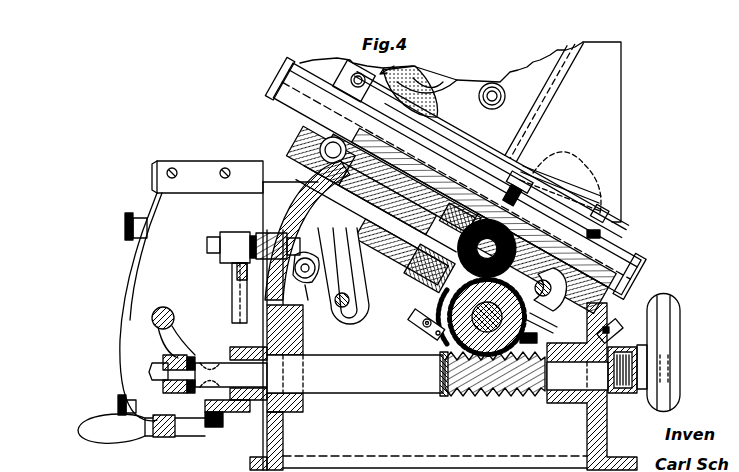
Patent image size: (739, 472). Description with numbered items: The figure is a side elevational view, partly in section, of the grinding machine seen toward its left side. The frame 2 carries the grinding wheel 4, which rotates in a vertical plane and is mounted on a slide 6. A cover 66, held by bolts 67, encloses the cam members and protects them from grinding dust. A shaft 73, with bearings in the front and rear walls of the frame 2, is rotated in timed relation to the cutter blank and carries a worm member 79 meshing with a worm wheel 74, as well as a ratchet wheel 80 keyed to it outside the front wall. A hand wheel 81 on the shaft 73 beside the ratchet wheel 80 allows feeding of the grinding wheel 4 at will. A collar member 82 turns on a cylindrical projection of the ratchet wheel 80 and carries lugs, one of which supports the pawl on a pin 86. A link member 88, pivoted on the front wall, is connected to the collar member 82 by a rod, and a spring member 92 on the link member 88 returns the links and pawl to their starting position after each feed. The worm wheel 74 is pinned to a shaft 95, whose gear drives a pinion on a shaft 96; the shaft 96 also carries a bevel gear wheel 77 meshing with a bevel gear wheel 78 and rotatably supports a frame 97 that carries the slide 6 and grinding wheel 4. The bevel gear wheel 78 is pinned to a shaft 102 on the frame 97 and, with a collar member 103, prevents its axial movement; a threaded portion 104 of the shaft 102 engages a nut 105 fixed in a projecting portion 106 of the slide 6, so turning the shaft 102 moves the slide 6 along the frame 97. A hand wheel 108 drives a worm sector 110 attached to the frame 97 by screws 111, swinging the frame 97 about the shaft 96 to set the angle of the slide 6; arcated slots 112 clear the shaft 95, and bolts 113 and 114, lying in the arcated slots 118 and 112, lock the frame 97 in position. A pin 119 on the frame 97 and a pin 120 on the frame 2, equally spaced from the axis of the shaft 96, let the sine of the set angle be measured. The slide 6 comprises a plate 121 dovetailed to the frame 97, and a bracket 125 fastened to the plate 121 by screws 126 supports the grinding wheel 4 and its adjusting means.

The frame 2 is at (602, 442).
The grinding wheel 4 is at (391, 62).
The slide 6 is at (620, 240).
The cover 66 is at (130, 291).
The bolts 67 is at (128, 214).
The shaft 73 is at (400, 394).
The worm wheel 74 is at (447, 305).
The bevel gear wheel 77 is at (468, 291).
The bevel gear wheel 78 is at (457, 255).
The worm member 79 is at (486, 396).
The ratchet wheel 80 is at (207, 347).
The hand wheel 81 is at (166, 307).
The collar member 82 is at (240, 413).
The pin 86 is at (200, 420).
The link member 88 is at (237, 236).
The spring member 92 is at (245, 232).
The shaft 95 is at (442, 357).
The shaft 96 is at (527, 198).
The frame 97 is at (378, 250).
The shaft 102 is at (413, 268).
The collar member 103 is at (352, 237).
The threaded portion 104 is at (402, 184).
The nut 105 is at (376, 196).
The projecting portion 106 is at (312, 170).
The hand wheel 108 is at (674, 320).
The worm sector 110 is at (420, 334).
The screws 111 is at (422, 325).
The arcated slots 112 is at (492, 290).
The bolt 113 is at (346, 295).
The bolt 114 is at (589, 329).
The arcated slots 118 is at (352, 315).
The pin 119 is at (318, 142).
The pin 120 is at (308, 286).
The plate 121 is at (633, 261).
The bracket 125 is at (620, 160).
The screws 126 is at (567, 177).